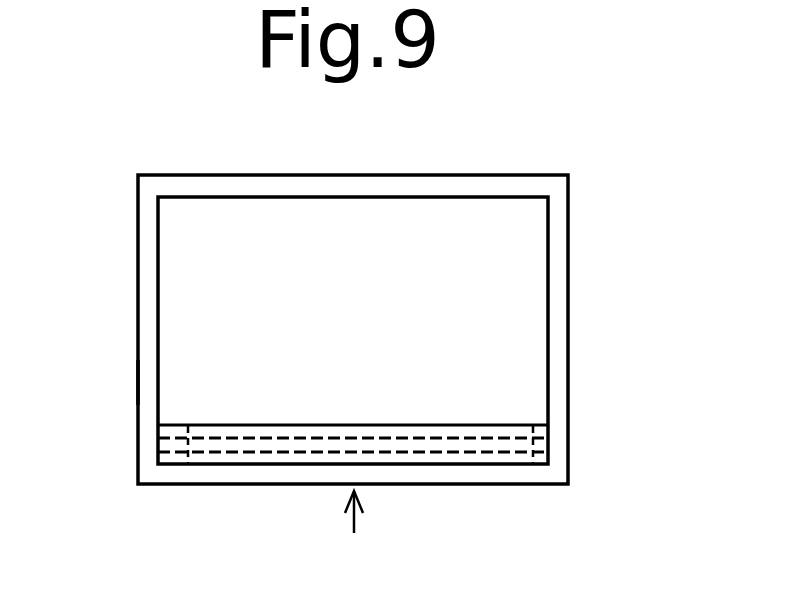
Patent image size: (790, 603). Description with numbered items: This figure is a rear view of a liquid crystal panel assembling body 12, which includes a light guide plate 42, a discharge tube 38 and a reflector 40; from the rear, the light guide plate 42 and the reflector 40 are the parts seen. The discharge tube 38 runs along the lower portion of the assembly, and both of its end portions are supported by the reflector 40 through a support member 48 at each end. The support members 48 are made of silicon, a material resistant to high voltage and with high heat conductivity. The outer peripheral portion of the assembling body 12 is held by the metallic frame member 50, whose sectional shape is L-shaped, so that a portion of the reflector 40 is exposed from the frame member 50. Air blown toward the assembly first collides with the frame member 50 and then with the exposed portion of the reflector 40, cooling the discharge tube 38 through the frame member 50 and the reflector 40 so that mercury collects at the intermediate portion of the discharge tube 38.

The housing 12 is at (500, 225).
The light guide plate 42 is at (515, 316).
The reflector 40 is at (423, 425).
The discharge tube 38 is at (480, 442).
The support member 48 is at (174, 465).
The frame member 50 is at (145, 383).